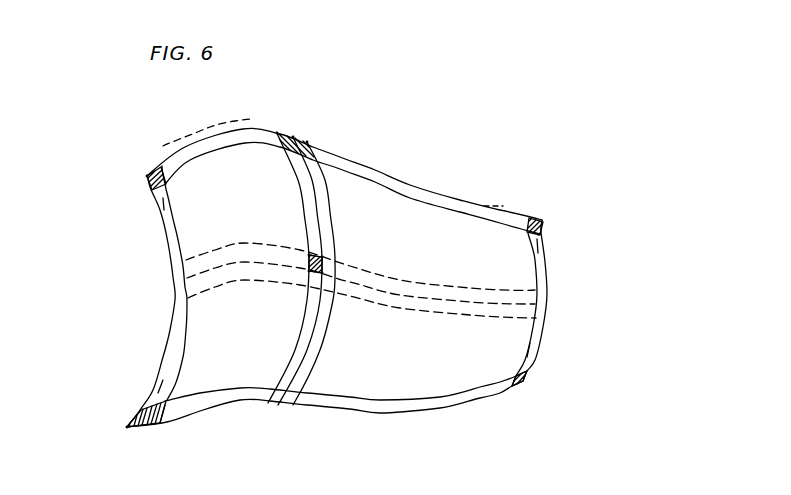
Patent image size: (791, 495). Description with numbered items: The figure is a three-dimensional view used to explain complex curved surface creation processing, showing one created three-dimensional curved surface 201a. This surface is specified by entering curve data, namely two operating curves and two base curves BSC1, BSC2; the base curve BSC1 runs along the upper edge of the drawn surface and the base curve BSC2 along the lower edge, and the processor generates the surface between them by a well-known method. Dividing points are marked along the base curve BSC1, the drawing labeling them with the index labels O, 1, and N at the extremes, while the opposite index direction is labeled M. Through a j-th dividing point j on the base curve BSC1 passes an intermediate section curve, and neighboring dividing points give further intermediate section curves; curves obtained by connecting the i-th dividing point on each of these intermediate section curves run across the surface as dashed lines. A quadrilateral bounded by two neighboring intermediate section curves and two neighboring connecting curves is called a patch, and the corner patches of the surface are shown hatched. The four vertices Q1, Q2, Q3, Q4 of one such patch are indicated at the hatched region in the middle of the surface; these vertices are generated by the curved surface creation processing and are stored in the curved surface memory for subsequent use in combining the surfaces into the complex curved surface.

The base curve BSC1 is at (437, 197).
The base curve BSC2 is at (344, 411).
The first three-dimensional curved surface 201a is at (475, 375).
The patch vertex Q1 is at (309, 276).
The patch vertex Q2 is at (309, 255).
The patch vertex Q3 is at (323, 257).
The patch vertex Q4 is at (323, 275).
The origin index O is at (140, 164).
The row index 1 is at (201, 140).
The column index N is at (503, 205).
The row index M is at (117, 421).
The dividing point index j is at (270, 118).